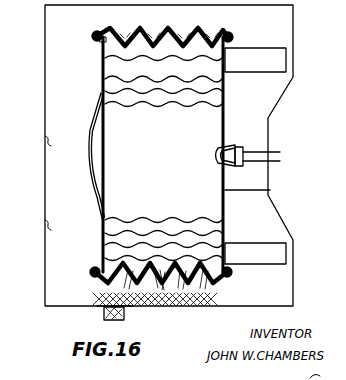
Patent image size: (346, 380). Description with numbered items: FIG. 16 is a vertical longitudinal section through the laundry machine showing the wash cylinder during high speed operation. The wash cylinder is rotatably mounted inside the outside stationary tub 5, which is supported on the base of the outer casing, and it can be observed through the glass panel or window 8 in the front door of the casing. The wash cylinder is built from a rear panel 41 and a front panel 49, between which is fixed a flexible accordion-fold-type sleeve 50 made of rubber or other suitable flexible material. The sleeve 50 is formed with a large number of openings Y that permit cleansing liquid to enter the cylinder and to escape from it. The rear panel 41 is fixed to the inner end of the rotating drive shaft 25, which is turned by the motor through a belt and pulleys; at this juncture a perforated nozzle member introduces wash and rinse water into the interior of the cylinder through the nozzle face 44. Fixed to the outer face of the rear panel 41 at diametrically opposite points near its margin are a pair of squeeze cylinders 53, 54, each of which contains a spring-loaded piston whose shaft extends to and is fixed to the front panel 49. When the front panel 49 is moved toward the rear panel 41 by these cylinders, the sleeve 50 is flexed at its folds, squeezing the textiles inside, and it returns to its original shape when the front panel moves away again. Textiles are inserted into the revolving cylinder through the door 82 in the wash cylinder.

The stationary tub 5 is at (50, 306).
The glass panel or window 8 is at (45, 145).
The drive shaft 25 is at (271, 152).
The rear panel 41 is at (266, 193).
The nozzle face 44 is at (217, 155).
The front panel 49 is at (103, 246).
The flexible accordion-fold-type sleeve 50 is at (103, 38).
The squeeze cylinder 53 is at (273, 57).
The squeeze cylinder 54 is at (283, 257).
The door 82 is at (93, 110).
The openings Y is at (184, 257).